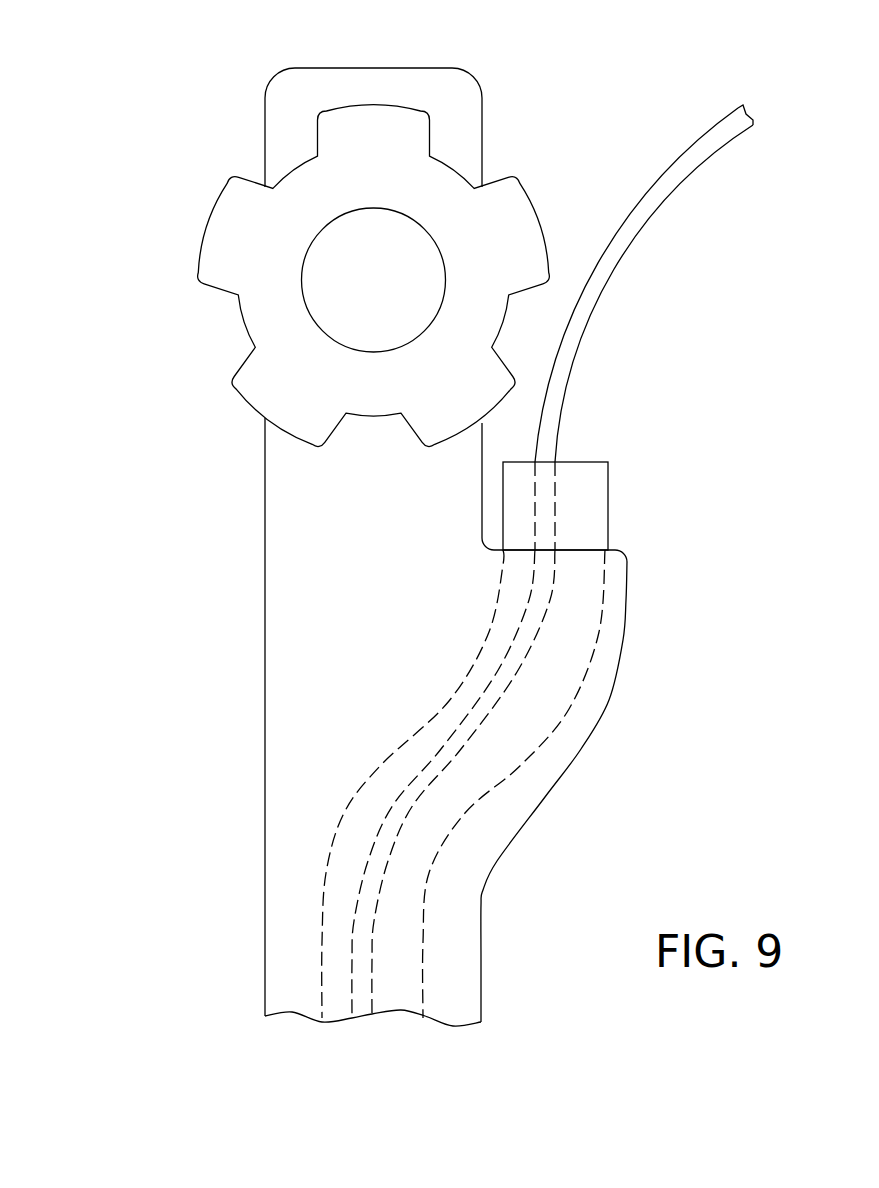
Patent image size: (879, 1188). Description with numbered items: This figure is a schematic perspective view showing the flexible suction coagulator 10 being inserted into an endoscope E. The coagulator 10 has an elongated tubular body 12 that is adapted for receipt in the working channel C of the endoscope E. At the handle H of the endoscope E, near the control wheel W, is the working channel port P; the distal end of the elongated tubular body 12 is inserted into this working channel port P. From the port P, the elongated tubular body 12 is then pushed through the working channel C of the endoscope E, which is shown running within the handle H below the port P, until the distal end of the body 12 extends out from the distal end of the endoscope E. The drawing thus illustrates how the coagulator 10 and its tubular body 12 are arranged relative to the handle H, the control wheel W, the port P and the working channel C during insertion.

The endoscope E is at (160, 113).
The control wheel W is at (230, 260).
The flexible suction coagulator 10 is at (689, 111).
The elongated tubular body 12 is at (617, 265).
The working channel port P is at (570, 462).
The handle H is at (295, 635).
The working channel C is at (547, 742).